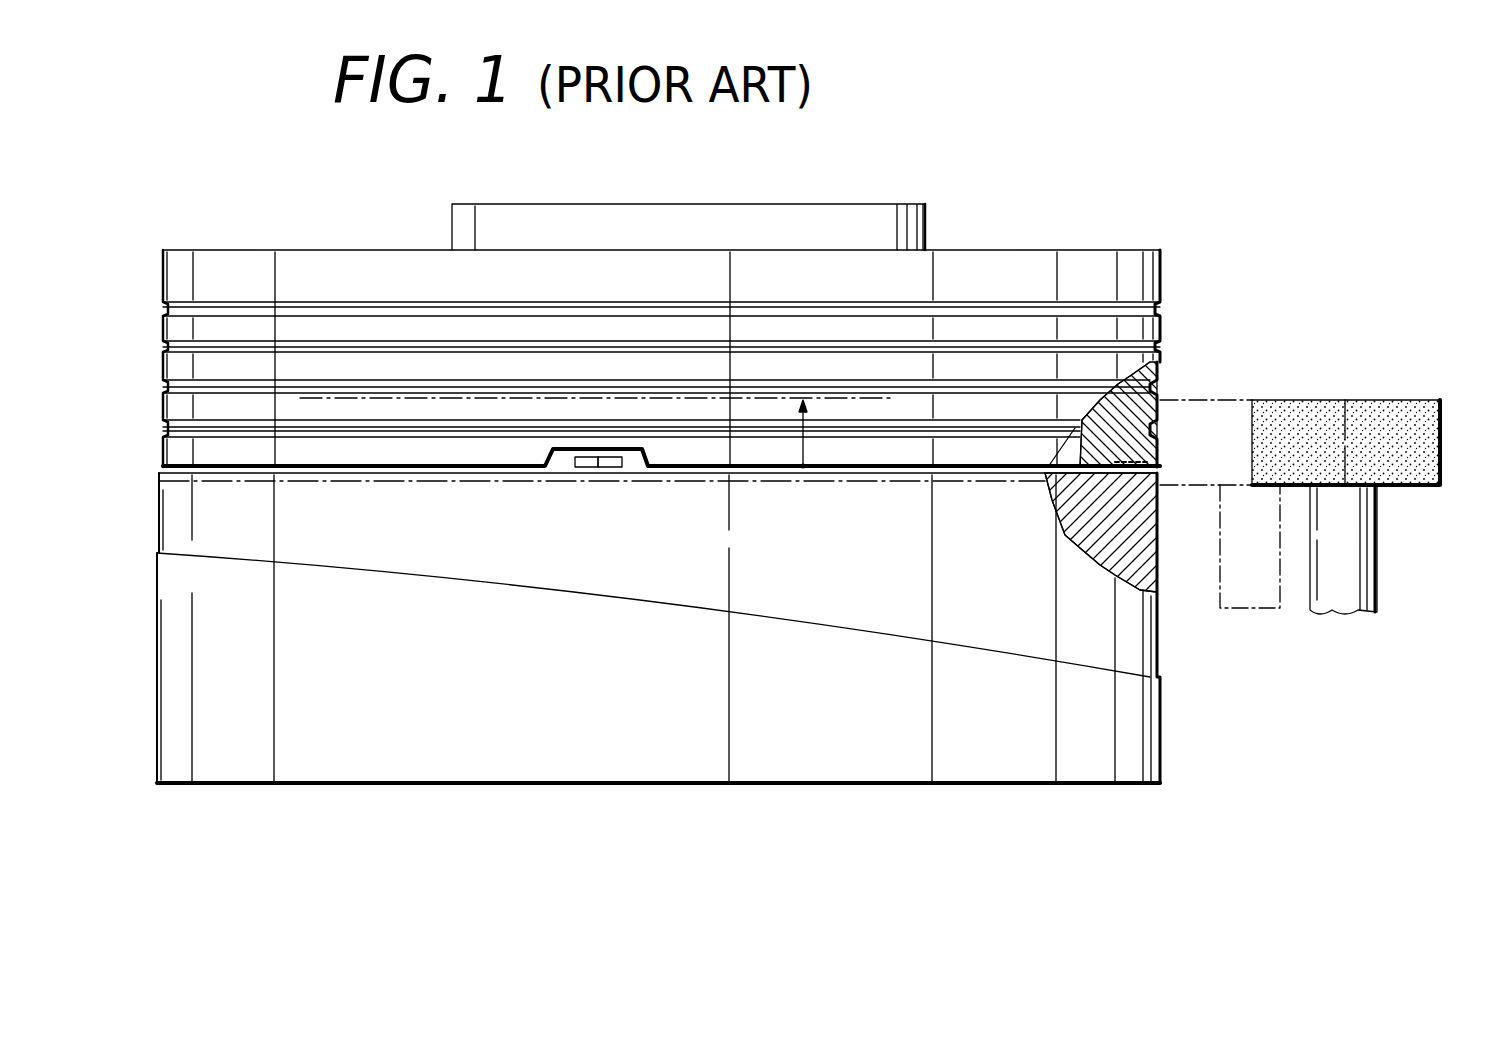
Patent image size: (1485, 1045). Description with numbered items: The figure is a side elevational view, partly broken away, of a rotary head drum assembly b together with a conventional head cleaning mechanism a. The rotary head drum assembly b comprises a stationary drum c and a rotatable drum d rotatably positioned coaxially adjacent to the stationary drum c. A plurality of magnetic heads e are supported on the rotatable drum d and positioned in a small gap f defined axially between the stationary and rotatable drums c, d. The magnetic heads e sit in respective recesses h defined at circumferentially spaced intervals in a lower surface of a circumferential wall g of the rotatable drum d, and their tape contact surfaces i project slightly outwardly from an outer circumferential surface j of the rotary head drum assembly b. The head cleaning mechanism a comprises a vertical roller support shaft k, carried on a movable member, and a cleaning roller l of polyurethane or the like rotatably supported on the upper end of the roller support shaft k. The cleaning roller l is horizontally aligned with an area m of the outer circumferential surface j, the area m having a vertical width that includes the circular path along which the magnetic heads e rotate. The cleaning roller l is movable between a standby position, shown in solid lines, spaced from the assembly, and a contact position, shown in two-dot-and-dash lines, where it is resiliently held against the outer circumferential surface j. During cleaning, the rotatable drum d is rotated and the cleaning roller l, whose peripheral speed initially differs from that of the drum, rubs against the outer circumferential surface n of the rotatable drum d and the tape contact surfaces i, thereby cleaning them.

The head cleaning mechanism a is at (1285, 340).
The rotary head drum assembly b is at (955, 785).
The stationary drum c is at (752, 788).
The rotatable drum d is at (977, 247).
The magnetic heads e is at (580, 468).
The gap f is at (458, 470).
The circumferential wall g is at (1130, 386).
The recesses h is at (632, 463).
The tape contact surfaces i is at (610, 468).
The outer circumferential surface j is at (933, 473).
The roller support shaft k is at (1377, 558).
The cleaning roller l is at (1205, 402).
The area m is at (822, 435).
The outer circumferential surface of the rotatable drum n is at (1160, 325).